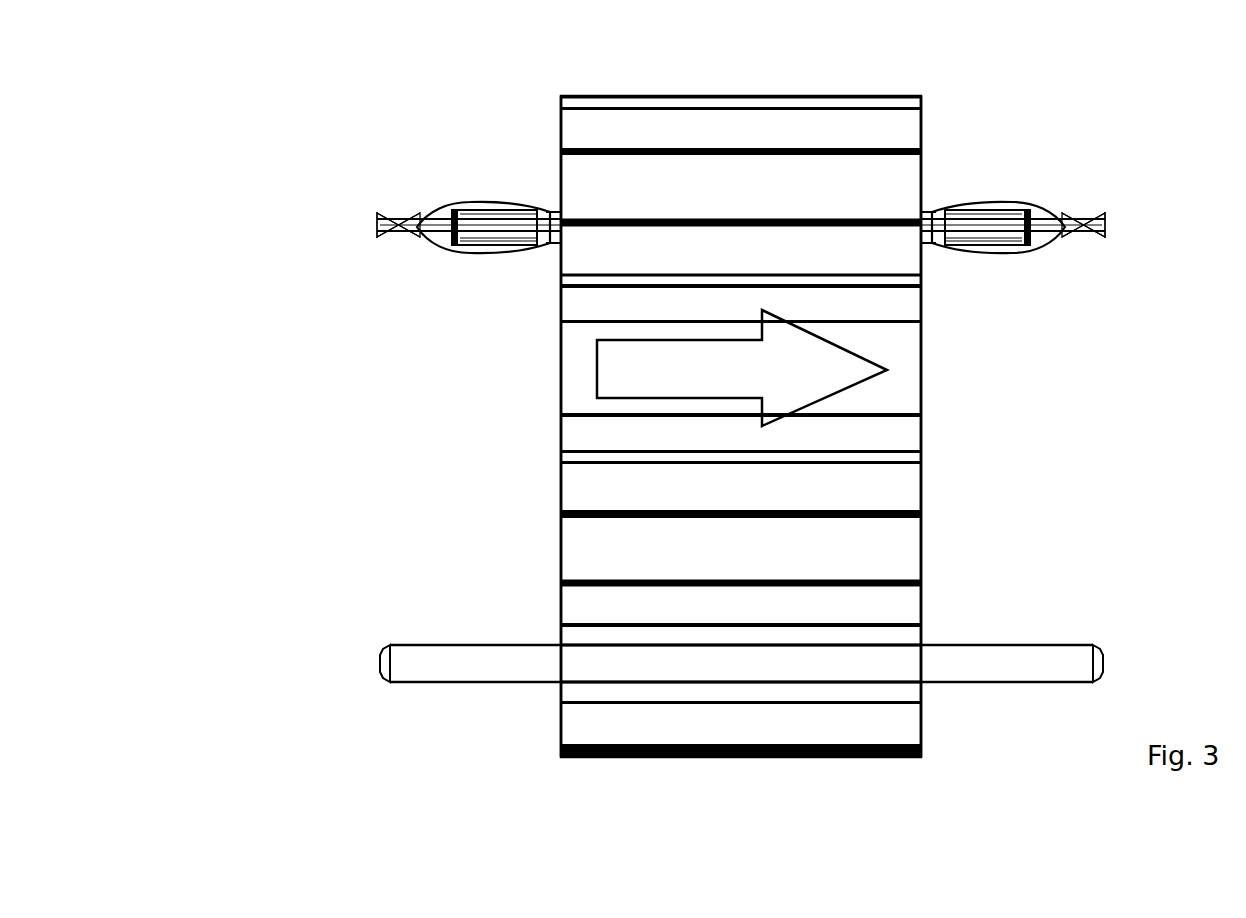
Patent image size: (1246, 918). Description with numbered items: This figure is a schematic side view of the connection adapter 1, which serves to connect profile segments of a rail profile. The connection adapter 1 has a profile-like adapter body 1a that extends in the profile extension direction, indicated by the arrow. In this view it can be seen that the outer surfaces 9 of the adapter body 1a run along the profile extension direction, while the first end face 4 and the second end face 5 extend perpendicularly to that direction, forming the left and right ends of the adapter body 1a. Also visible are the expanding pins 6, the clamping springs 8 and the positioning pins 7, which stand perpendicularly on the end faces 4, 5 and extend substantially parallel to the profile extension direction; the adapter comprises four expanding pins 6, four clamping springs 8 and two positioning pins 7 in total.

The connection adapter 1 is at (325, 321).
The adapter body 1a is at (580, 492).
The first end face 4 is at (558, 352).
The second end face 5 is at (924, 358).
The expanding pin 6 is at (538, 218).
The positioning pin 7 is at (408, 655).
The clamping spring 8 is at (382, 237).
The outer surface 9 is at (660, 95).